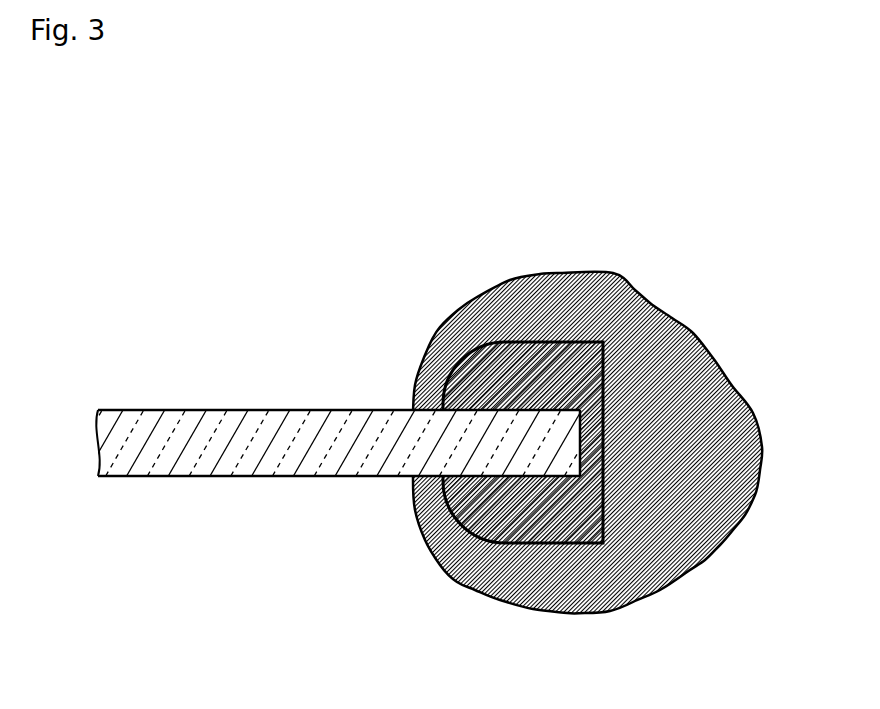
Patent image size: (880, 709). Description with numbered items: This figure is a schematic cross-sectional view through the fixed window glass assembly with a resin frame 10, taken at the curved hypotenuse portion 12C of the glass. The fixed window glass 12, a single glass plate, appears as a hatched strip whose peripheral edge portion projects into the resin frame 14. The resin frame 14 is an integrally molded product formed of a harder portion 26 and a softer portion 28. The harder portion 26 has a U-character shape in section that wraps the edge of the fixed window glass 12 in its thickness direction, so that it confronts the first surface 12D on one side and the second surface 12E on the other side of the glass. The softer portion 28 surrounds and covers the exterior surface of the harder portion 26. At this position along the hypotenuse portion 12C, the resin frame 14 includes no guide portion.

The fixed window glass assembly with a resin frame 10 is at (580, 185).
The fixed window glass 12 is at (178, 398).
The hypotenuse portion 12C is at (582, 449).
The first surface 12D is at (253, 477).
The second surface 12E is at (280, 410).
The resin frame 14 is at (708, 285).
The harder portion 26 is at (548, 345).
The softer portion 28 is at (642, 306).